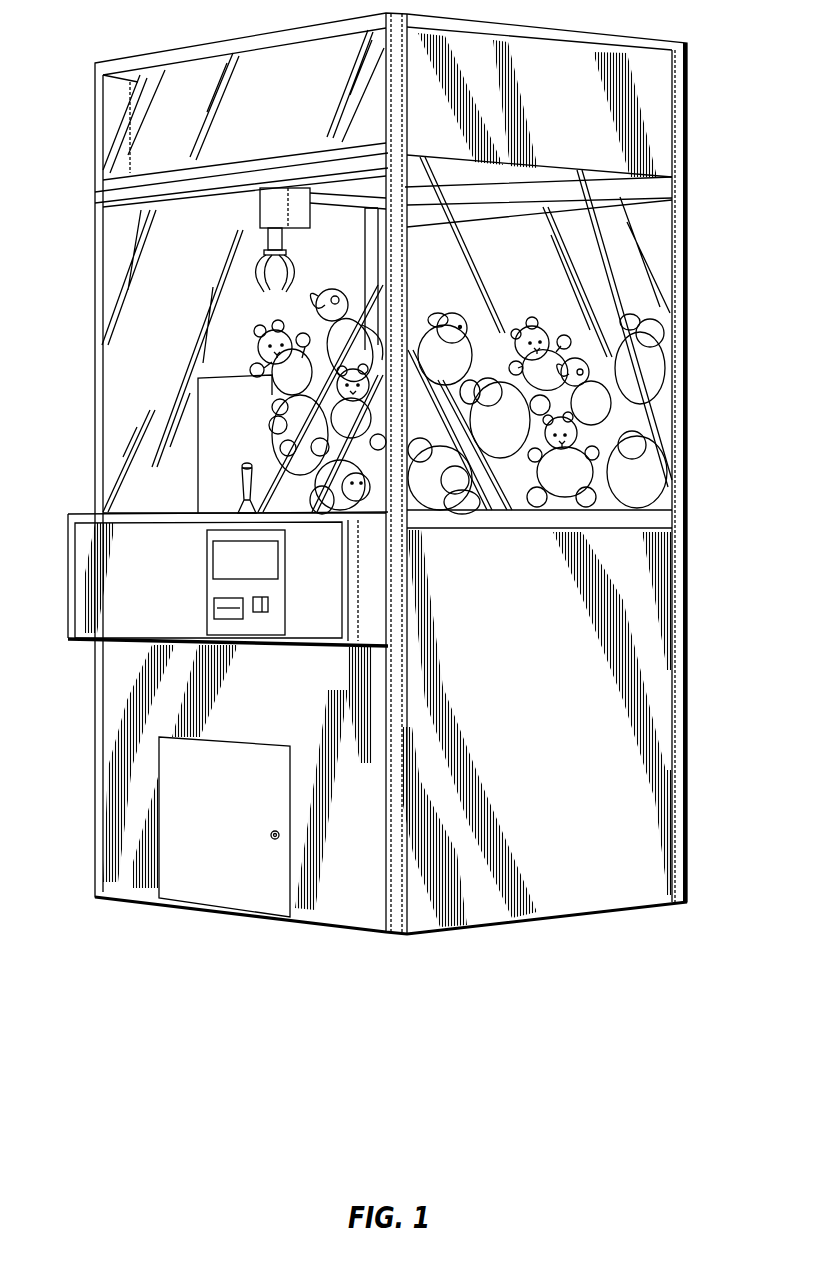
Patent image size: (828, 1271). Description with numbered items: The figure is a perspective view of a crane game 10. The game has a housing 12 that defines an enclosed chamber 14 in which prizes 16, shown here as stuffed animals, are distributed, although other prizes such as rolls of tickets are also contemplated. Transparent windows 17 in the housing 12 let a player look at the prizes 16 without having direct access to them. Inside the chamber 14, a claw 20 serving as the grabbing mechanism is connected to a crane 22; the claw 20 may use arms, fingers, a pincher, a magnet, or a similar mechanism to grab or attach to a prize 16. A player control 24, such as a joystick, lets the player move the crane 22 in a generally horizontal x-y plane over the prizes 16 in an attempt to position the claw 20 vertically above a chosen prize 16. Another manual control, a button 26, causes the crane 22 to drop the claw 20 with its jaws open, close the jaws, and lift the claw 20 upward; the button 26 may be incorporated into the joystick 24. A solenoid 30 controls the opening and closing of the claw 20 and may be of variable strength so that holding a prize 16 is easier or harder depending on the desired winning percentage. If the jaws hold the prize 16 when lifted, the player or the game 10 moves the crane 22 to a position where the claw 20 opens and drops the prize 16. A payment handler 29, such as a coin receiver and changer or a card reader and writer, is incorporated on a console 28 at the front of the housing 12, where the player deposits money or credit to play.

The crane game 10 is at (727, 80).
The housing 12 is at (686, 650).
The enclosed chamber 14 is at (137, 363).
The prizes 16 is at (660, 395).
The transparent windows 17 is at (198, 267).
The claw 20 is at (293, 270).
The crane 22 is at (303, 213).
The player control 24 is at (240, 482).
The button 26 is at (247, 463).
The console 28 is at (132, 627).
The payment handler 29 is at (268, 625).
The solenoid 30 is at (262, 236).